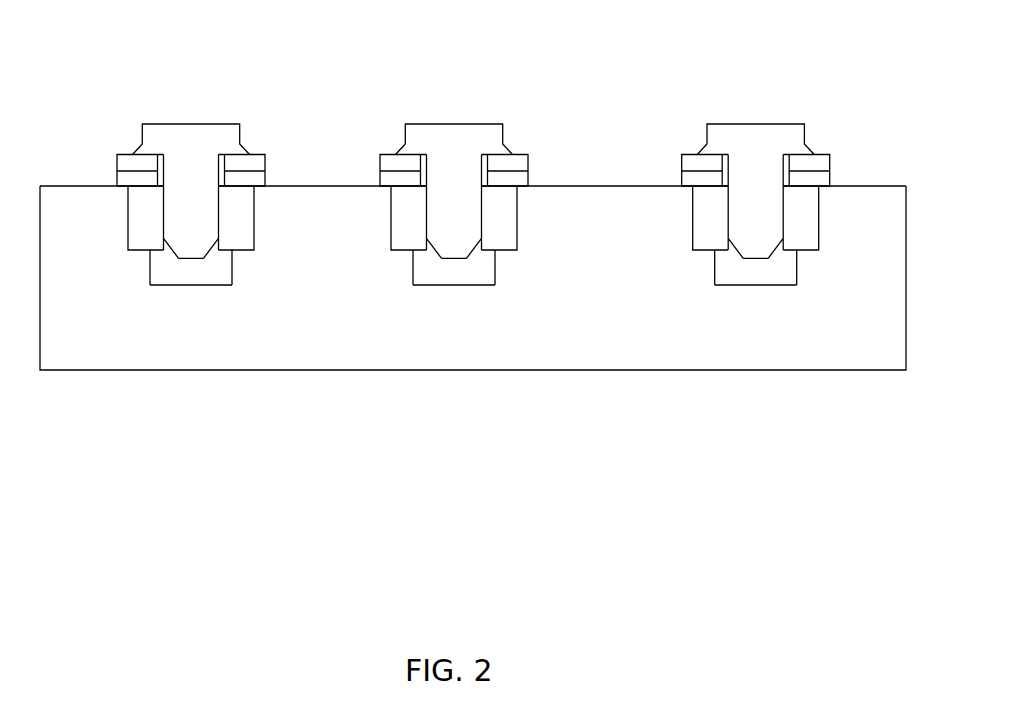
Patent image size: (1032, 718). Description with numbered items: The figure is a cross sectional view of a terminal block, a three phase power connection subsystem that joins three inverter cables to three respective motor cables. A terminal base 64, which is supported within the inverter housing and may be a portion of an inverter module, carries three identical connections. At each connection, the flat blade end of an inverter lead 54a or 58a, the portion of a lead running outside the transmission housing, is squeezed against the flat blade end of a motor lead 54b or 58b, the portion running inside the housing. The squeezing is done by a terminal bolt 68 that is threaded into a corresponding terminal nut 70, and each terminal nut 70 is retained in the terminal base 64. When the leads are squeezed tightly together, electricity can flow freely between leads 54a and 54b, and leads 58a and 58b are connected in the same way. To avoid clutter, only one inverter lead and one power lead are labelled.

The terminal base 64 is at (605, 370).
The terminal bolt 68 is at (306, 156).
The inverter lead 54a is at (306, 120).
The inverter lead 58a is at (266, 164).
The motor lead 54b is at (573, 120).
The motor lead 58b is at (528, 173).
The terminal nut 70 is at (391, 215).